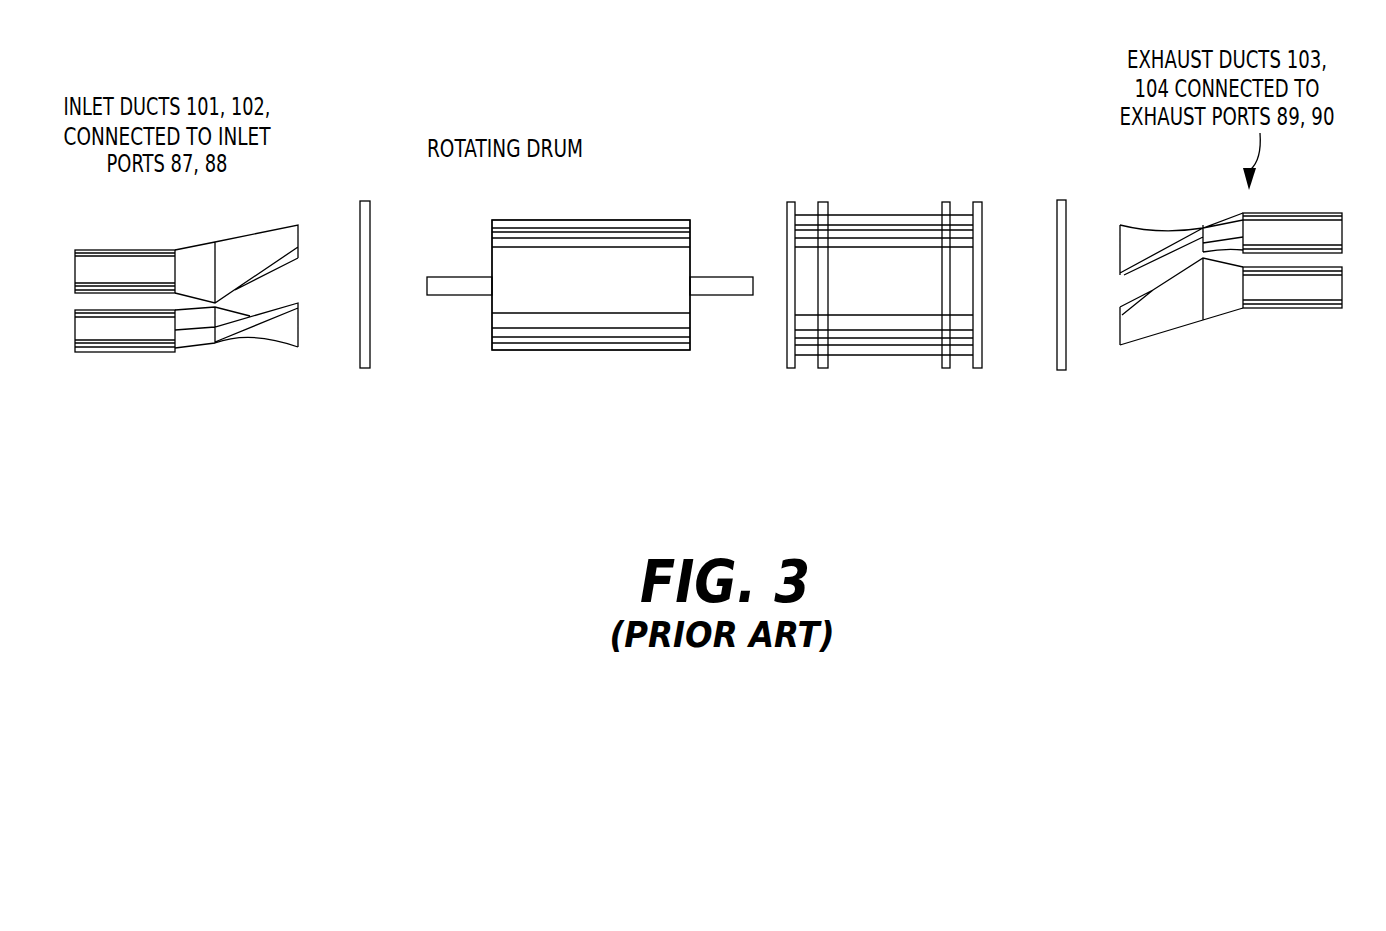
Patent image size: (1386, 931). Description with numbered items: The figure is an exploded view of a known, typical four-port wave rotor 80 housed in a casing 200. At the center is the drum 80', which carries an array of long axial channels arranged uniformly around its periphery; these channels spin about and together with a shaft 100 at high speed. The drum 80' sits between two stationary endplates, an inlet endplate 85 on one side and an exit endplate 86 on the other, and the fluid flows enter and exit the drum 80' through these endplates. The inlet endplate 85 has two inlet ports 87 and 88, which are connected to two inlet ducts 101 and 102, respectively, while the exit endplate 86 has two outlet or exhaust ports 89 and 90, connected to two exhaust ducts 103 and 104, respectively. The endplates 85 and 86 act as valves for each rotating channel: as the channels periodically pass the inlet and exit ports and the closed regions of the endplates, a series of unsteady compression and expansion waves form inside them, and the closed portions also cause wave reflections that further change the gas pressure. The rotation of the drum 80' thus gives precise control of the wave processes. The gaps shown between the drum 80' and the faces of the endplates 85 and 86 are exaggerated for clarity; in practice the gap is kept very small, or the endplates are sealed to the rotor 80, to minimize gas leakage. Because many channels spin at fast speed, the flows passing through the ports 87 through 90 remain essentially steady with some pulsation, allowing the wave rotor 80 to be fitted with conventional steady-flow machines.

The wave rotor 80 is at (591, 194).
The drum 80' is at (588, 255).
The inlet endplate 85 is at (365, 370).
The exit endplate 86 is at (1060, 372).
The inlet port 87 is at (300, 240).
The inlet port 88 is at (300, 330).
The exhaust port 89 is at (1342, 233).
The exhaust port 90 is at (1342, 285).
The shaft 100 is at (742, 275).
The inlet duct 101 is at (72, 277).
The inlet duct 102 is at (72, 330).
The exhaust duct 103 is at (1118, 247).
The exhaust duct 104 is at (1112, 345).
The casing 200 is at (887, 214).